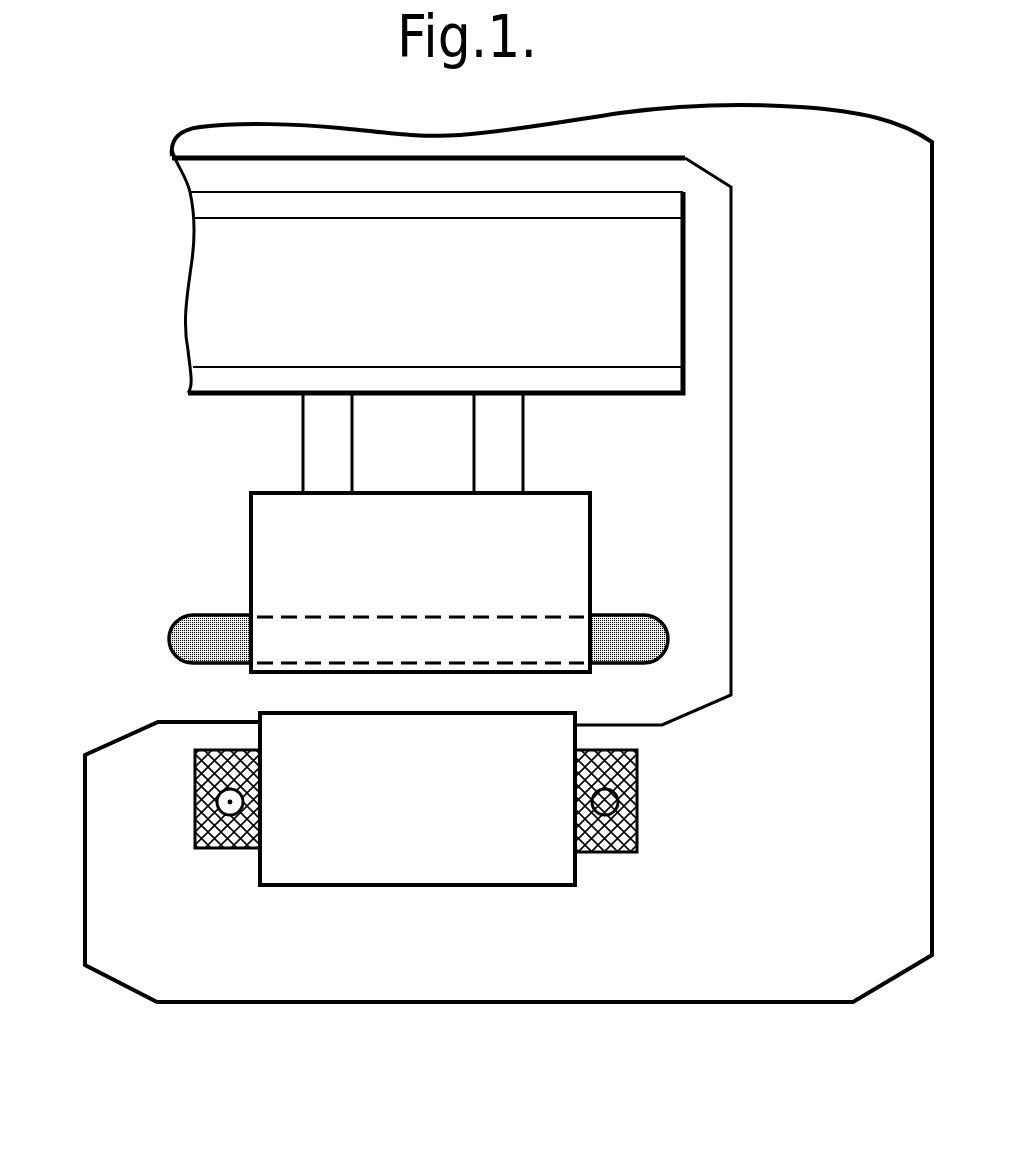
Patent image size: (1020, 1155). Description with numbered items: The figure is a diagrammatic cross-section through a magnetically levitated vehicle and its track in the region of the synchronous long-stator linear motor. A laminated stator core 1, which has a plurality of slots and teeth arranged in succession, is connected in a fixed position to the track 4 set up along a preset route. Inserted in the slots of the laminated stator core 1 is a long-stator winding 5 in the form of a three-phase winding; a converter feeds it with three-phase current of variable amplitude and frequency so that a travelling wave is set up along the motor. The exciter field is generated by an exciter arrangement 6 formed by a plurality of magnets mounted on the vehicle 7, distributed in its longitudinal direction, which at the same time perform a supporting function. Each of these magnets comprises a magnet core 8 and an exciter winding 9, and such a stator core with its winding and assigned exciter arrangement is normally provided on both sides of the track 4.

The laminated stator core 1 is at (270, 526).
The track 4 is at (208, 295).
The long-stator winding 5 is at (183, 632).
The exciter arrangement 6 is at (419, 886).
The vehicle 7 is at (662, 970).
The magnet core 8 is at (504, 870).
The exciter winding 9 is at (197, 820).